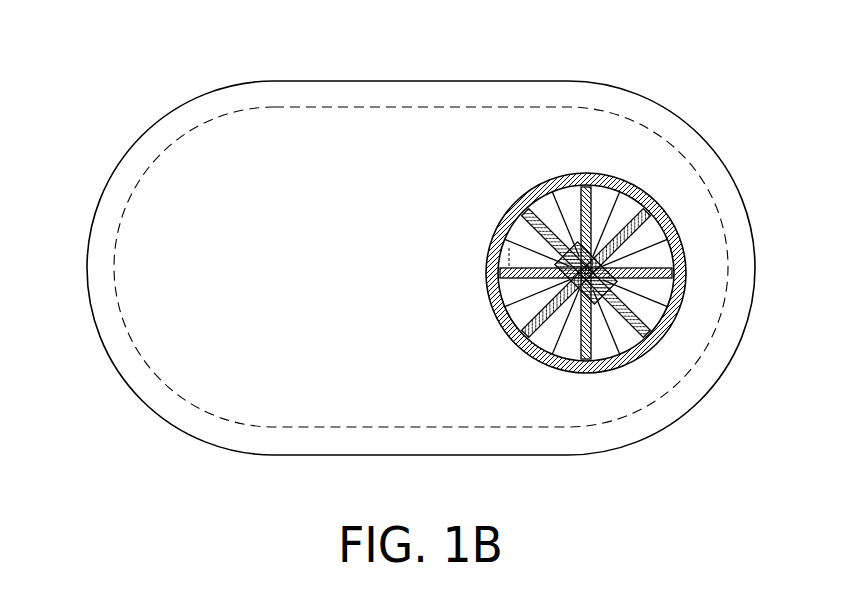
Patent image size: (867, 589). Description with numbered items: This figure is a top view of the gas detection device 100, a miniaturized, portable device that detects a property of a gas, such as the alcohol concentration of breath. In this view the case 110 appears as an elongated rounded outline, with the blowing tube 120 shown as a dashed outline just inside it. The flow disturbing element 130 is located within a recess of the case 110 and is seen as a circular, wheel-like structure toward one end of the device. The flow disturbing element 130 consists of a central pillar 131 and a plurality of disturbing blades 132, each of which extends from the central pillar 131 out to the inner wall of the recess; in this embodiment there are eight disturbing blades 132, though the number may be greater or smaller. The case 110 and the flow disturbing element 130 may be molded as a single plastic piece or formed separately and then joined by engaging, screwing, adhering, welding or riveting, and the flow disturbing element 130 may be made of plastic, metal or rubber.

The gas detection device 100 is at (105, 60).
The case 110 is at (712, 167).
The blowing tube 120 is at (700, 227).
The flow disturbing element 130 is at (652, 316).
The central pillar 131 is at (680, 272).
The disturbing blades 132 is at (506, 236).